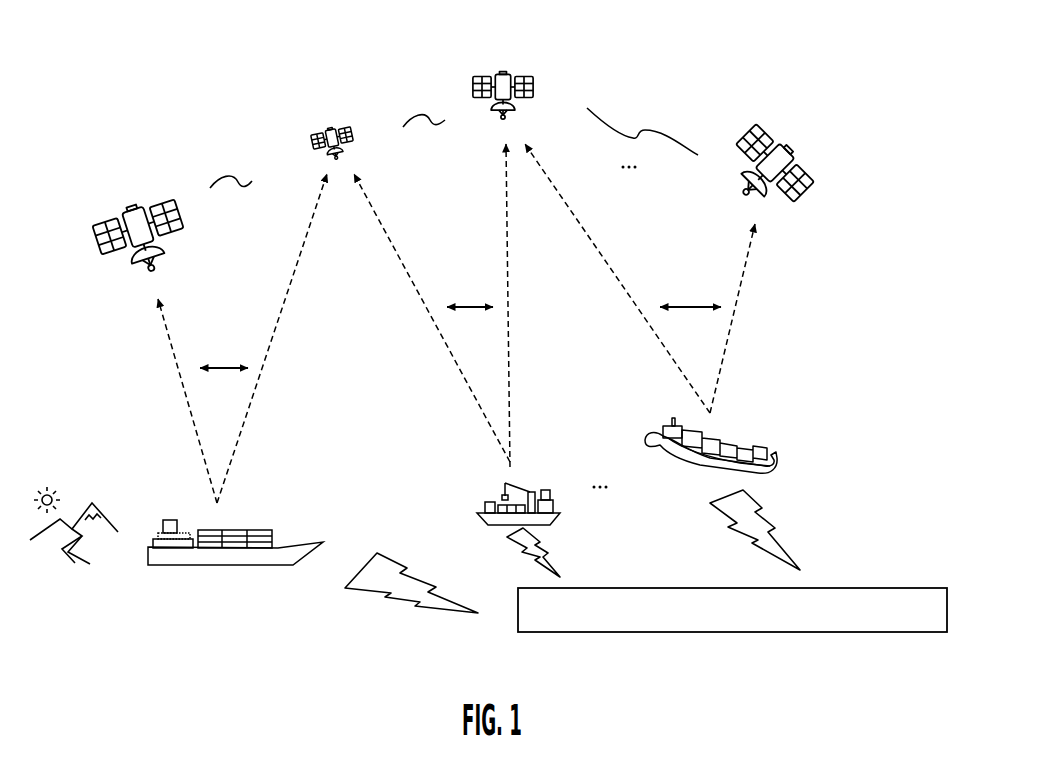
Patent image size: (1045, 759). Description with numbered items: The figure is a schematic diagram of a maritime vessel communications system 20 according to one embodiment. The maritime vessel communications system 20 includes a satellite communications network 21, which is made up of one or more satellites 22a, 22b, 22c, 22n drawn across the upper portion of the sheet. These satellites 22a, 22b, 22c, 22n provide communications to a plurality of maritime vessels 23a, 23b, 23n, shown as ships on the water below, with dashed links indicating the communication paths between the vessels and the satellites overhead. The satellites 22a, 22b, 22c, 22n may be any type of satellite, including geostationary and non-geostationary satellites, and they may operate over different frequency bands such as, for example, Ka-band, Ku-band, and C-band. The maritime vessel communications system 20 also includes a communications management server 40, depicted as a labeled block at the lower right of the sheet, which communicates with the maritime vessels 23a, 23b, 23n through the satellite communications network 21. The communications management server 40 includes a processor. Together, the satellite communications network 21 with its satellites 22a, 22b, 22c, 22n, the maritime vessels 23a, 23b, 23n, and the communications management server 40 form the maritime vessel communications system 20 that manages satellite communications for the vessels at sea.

The maritime vessel communications system 20 is at (334, 66).
The satellite communications network 21 is at (213, 145).
The satellite 22a is at (115, 220).
The satellite 22b is at (353, 117).
The satellite 22c is at (525, 73).
The satellite 22n is at (762, 128).
The maritime vessel 23a is at (175, 566).
The maritime vessel 23b is at (560, 517).
The maritime vessel 23n is at (773, 453).
The communications management server 40 is at (890, 582).